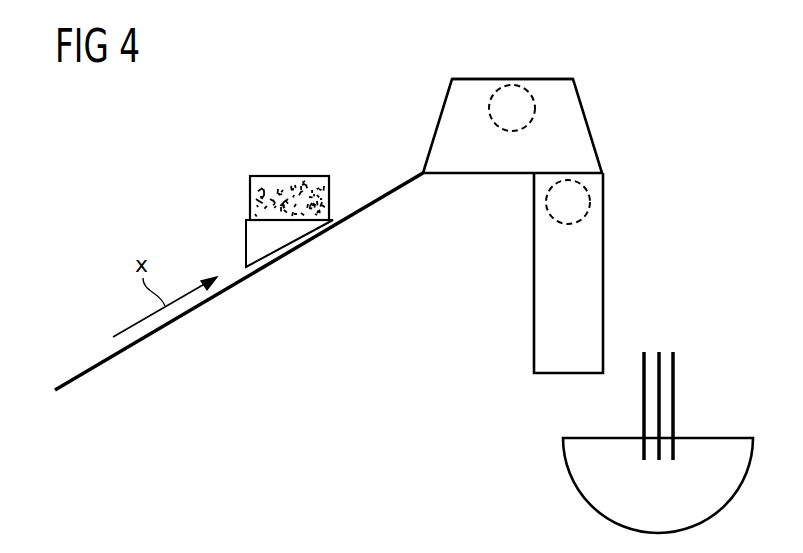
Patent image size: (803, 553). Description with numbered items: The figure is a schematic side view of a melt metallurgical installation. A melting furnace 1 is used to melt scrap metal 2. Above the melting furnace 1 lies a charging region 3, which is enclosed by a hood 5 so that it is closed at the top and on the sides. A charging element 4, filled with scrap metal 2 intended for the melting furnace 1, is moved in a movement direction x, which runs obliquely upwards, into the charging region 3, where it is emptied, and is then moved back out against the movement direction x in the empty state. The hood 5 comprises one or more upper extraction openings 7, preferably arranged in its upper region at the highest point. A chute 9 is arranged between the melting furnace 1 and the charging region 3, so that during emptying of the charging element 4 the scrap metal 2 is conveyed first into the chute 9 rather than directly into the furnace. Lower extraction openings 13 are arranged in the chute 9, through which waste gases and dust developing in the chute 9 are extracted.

The melting furnace 1 is at (732, 406).
The scrap metal 2 is at (288, 185).
The charging region 3 is at (577, 133).
The charging element 4 is at (248, 198).
The hood 5 is at (580, 92).
The upper extraction openings 7 is at (515, 98).
The chute 9 is at (591, 299).
The lower extraction openings 13 is at (582, 202).